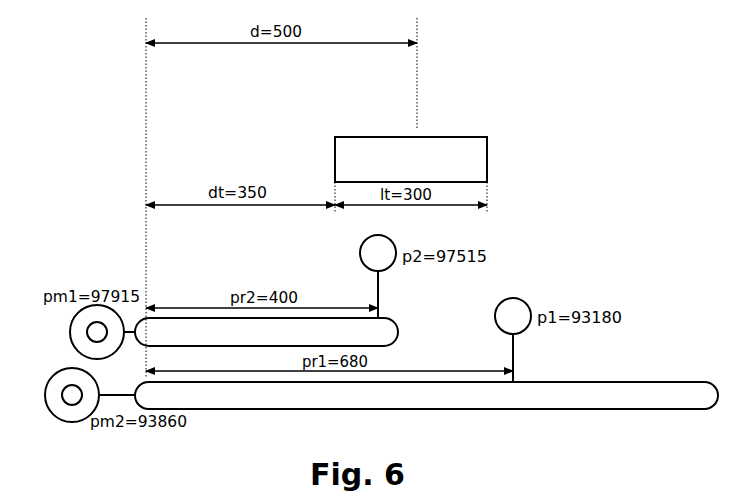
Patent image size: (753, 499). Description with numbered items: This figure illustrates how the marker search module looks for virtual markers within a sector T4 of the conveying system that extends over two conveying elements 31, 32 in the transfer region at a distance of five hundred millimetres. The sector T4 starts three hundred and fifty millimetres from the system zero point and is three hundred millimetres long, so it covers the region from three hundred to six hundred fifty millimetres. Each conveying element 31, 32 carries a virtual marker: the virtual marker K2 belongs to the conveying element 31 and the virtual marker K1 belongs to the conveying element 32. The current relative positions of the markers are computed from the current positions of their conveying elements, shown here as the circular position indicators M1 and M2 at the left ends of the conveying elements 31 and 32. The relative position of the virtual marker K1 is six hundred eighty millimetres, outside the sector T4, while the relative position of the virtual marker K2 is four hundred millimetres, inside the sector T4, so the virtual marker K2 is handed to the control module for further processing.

The sector T4 is at (478, 158).
The virtual marker K2 is at (383, 248).
The virtual marker K1 is at (520, 312).
The conveying element 31 is at (395, 325).
The conveying element 32 is at (678, 387).
The first motor M1 is at (78, 338).
The second motor M2 is at (53, 402).